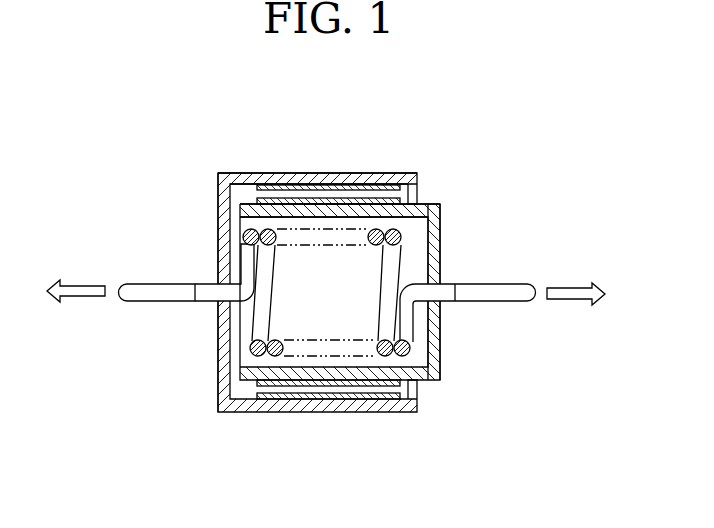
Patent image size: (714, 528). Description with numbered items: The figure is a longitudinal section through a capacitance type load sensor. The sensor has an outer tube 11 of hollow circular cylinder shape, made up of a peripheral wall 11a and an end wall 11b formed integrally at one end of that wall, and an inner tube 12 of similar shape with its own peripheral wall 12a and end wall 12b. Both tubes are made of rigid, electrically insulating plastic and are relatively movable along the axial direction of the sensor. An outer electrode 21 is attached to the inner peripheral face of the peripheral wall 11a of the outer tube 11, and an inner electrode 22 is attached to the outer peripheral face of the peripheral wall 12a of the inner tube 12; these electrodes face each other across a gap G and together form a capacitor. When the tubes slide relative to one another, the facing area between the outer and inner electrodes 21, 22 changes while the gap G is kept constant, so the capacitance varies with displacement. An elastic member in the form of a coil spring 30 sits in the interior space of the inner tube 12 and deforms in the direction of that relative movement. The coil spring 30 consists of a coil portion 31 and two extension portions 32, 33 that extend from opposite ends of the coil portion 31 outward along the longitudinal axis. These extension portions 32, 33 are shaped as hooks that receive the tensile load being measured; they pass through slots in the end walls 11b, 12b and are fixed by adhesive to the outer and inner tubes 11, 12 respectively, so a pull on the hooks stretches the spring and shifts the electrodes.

The outer tube 11 is at (330, 234).
The peripheral wall of outer tube 11a is at (247, 178).
The end wall of outer tube 11b is at (187, 260).
The inner tube 12 is at (336, 221).
The peripheral wall of inner tube 12a is at (405, 210).
The end wall of inner tube 12b is at (438, 234).
The outer electrode 21 is at (299, 188).
The inner electrode 22 is at (337, 202).
The coil spring 30 is at (413, 268).
The coil portion 31 is at (245, 237).
The extension portion 32 is at (140, 293).
The extension portion 33 is at (515, 296).
The gap G is at (327, 388).